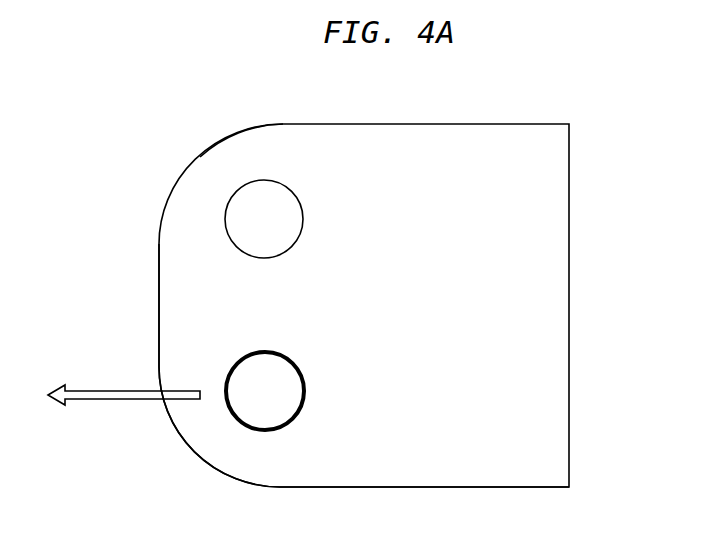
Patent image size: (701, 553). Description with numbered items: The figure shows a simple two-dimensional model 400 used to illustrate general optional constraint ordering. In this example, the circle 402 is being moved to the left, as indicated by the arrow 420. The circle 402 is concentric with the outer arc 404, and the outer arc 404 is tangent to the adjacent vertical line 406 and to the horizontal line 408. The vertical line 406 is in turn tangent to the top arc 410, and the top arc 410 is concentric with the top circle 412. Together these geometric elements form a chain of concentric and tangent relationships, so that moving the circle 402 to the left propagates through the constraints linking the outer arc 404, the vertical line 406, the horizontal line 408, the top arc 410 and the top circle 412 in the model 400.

The 2D model 400 is at (569, 261).
The circle 402 is at (305, 386).
The outer arc 404 is at (200, 455).
The vertical line 406 is at (159, 306).
The horizontal line 408 is at (455, 487).
The top arc 410 is at (200, 153).
The top circle 412 is at (303, 222).
The arrow 420 is at (103, 398).